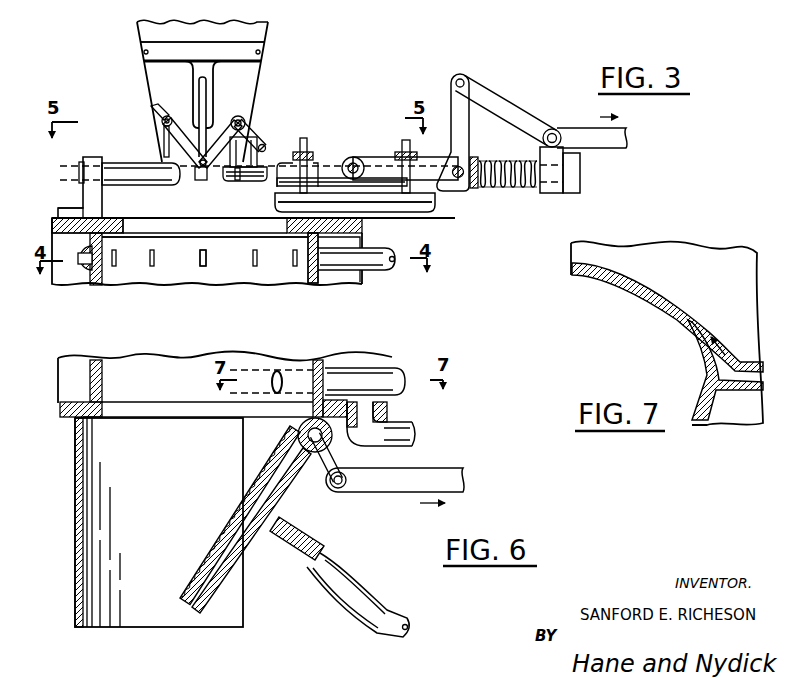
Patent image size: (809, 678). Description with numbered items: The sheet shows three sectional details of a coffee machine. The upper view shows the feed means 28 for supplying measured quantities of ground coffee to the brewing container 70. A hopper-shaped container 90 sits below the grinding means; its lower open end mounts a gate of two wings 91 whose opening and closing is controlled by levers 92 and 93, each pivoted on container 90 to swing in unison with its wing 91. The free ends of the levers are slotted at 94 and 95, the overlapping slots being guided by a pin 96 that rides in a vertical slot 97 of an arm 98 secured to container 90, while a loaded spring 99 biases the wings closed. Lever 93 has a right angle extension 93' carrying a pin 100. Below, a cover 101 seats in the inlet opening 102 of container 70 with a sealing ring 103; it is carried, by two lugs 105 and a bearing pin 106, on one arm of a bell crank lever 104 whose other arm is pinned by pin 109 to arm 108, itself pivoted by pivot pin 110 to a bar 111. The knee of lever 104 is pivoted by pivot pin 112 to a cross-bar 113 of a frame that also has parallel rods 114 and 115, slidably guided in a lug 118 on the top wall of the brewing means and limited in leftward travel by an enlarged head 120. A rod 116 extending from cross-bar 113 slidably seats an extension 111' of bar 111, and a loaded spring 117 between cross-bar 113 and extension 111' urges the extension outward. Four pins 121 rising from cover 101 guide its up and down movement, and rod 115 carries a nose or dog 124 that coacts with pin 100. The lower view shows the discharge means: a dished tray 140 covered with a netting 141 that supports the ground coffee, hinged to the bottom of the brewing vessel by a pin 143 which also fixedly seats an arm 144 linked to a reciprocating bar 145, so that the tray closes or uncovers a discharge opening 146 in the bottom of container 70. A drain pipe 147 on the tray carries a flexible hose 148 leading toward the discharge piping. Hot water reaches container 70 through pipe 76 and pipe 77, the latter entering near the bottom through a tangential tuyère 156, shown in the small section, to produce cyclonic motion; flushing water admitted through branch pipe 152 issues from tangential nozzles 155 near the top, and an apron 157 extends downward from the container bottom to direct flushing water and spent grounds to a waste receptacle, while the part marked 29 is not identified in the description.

In FIG. 3, the feed means 28 is at (318, 74).
In FIG. 6, the housing wall 29 is at (70, 533).
In FIG. 3, the brewing container 70 is at (108, 283).
In FIG. 7, the brewing container 70 is at (600, 267).
In FIG. 6, the brewing container 70 is at (103, 385).
In FIG. 6, the pipe 76 is at (417, 426).
In FIG. 7, the pipe 77 is at (750, 363).
In FIG. 6, the pipe 77 is at (393, 377).
In FIG. 3, the hopper-shaped container 90 is at (250, 72).
In FIG. 3, the gate wings 91 is at (165, 147).
In FIG. 3, the lever 92 is at (177, 118).
In FIG. 3, the lever 93 is at (239, 125).
In FIG. 3, the right angle extension 93' is at (269, 124).
In FIG. 3, the slot 94 is at (180, 168).
In FIG. 3, the slot 95 is at (218, 118).
In FIG. 3, the pin 96 is at (205, 178).
In FIG. 3, the vertical slot 97 is at (198, 78).
In FIG. 3, the arm 98 is at (197, 60).
In FIG. 3, the loaded spring 99 is at (152, 112).
In FIG. 3, the pin 100 is at (262, 150).
In FIG. 3, the cover 101 is at (372, 202).
In FIG. 3, the inlet opening 102 is at (127, 218).
In FIG. 3, the sealing ring 103 is at (415, 200).
In FIG. 3, the bell crank lever 104 is at (452, 102).
In FIG. 3, the lugs 105 is at (349, 160).
In FIG. 3, the bearing pin 106 is at (356, 160).
In FIG. 3, the arm 108 is at (498, 103).
In FIG. 3, the pin 109 is at (467, 78).
In FIG. 3, the pivot pin 110 is at (555, 132).
In FIG. 3, the bar 111 is at (617, 132).
In FIG. 3, the extension of bar 111' is at (563, 185).
In FIG. 3, the pivot pin 112 is at (458, 180).
In FIG. 3, the cross-bar 113 is at (473, 153).
In FIG. 3, the parallel rod 114 is at (107, 156).
In FIG. 3, the parallel rod 115 is at (242, 206).
In FIG. 3, the rod 116 is at (518, 188).
In FIG. 3, the loaded spring 117 is at (500, 190).
In FIG. 3, the lug 118 is at (92, 197).
In FIG. 3, the enlarged head 120 is at (578, 168).
In FIG. 3, the pins 121 is at (305, 140).
In FIG. 3, the nose or dog 124 is at (248, 172).
In FIG. 6, the dished tray 140 is at (250, 557).
In FIG. 6, the netting 141 is at (220, 528).
In FIG. 6, the pin 143 is at (316, 443).
In FIG. 6, the arm 144 is at (352, 462).
In FIG. 6, the bar 145 is at (438, 472).
In FIG. 6, the discharge opening 146 is at (107, 418).
In FIG. 6, the drain pipe 147 is at (292, 547).
In FIG. 6, the flexible hose 148 is at (350, 594).
In FIG. 3, the branch pipe 152 is at (373, 257).
In FIG. 3, the tangential nozzles or tuyères 155 is at (307, 262).
In FIG. 7, the tangential inlet or tuyère 156 is at (703, 357).
In FIG. 6, the tangential inlet or tuyère 156 is at (273, 372).
In FIG. 6, the apron 157 is at (125, 615).